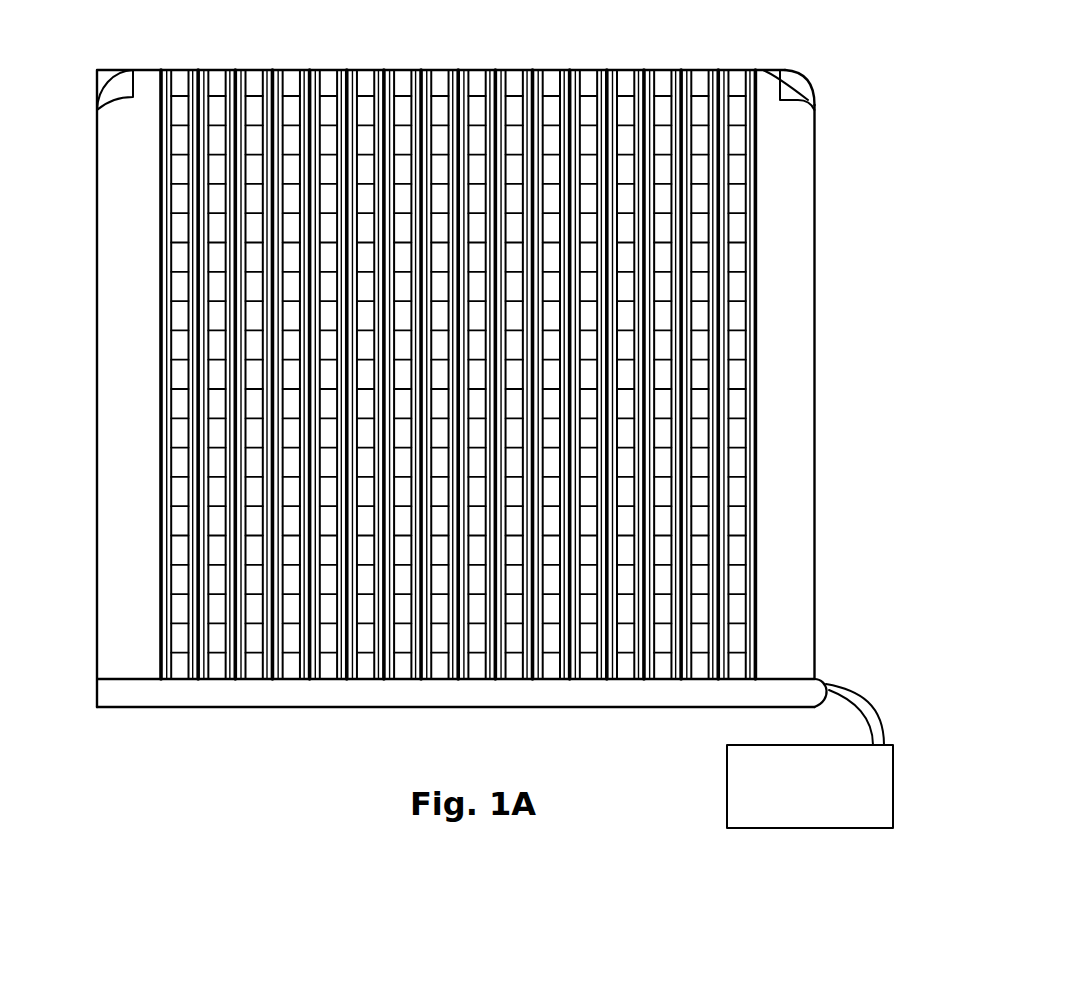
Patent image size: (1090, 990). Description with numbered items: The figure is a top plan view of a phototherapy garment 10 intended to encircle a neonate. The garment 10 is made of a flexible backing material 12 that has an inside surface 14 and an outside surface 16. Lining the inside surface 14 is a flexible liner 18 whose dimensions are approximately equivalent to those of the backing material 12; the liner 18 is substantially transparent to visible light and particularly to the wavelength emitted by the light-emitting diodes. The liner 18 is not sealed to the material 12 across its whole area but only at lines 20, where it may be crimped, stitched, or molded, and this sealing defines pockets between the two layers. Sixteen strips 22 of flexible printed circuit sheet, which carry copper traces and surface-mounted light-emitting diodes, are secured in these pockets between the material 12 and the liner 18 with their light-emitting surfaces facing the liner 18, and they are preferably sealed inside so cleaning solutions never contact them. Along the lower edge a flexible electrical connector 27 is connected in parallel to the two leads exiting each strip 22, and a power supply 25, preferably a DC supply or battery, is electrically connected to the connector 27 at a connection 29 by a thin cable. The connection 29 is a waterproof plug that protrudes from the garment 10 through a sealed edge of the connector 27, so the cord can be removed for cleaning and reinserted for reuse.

The phototherapy garment 10 is at (827, 288).
The flexible backing material 12 is at (808, 90).
The inside surface 14 is at (113, 68).
The outside surface 16 is at (795, 75).
The flexible liner 18 is at (780, 82).
The lines 20 is at (201, 82).
The strips 22 is at (442, 72).
The power supply 25 is at (778, 830).
The flexible electrical connector 27 is at (583, 708).
The connection 29 is at (826, 683).